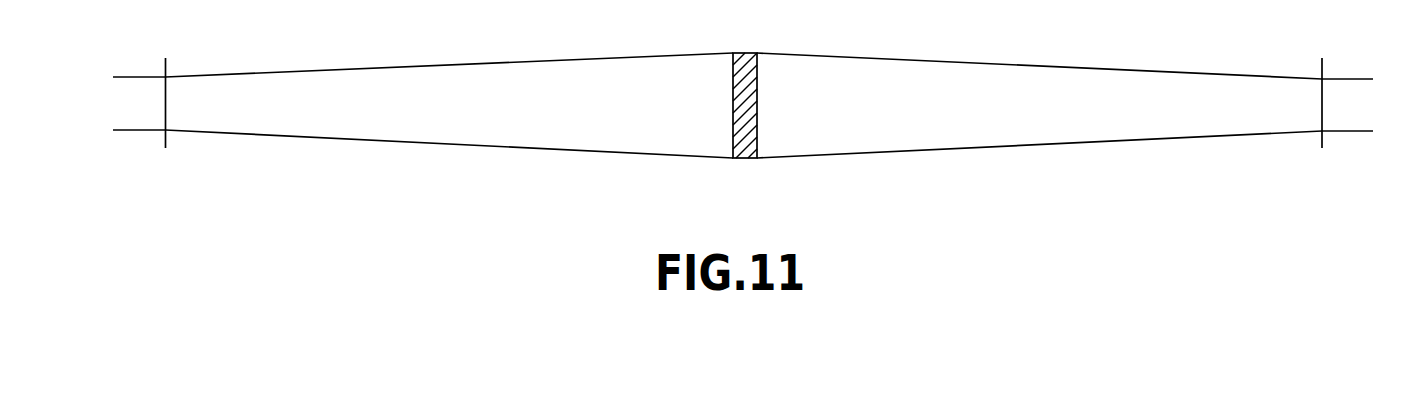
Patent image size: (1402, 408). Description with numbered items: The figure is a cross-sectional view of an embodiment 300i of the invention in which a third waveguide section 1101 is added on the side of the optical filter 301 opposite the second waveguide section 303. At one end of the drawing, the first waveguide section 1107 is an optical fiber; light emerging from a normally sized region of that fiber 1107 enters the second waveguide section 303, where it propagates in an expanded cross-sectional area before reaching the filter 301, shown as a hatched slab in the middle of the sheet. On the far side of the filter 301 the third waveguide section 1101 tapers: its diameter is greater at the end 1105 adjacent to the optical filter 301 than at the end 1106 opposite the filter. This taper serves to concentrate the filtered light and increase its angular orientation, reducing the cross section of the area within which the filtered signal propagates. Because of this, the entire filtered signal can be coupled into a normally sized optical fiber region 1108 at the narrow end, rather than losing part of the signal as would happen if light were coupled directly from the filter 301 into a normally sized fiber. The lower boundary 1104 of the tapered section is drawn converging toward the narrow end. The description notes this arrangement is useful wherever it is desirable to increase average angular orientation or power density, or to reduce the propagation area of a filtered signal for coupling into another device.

The normally sized optical fiber region 1108 is at (132, 118).
The end opposite the optical filter 1106 is at (166, 138).
The lower input light ray 1104 is at (533, 122).
The third waveguide section 1101 is at (450, 126).
The end adjacent to the optical filter 1105 is at (758, 187).
The optical filter 301 is at (735, 134).
The embodiment 300i is at (1032, 125).
The second waveguide section 303 is at (1039, 129).
The first waveguide section 1107 is at (1348, 115).